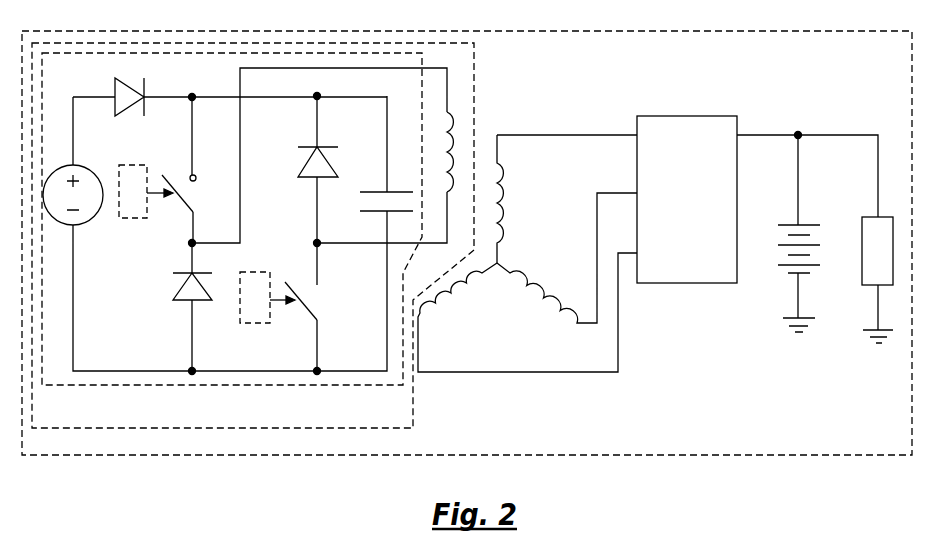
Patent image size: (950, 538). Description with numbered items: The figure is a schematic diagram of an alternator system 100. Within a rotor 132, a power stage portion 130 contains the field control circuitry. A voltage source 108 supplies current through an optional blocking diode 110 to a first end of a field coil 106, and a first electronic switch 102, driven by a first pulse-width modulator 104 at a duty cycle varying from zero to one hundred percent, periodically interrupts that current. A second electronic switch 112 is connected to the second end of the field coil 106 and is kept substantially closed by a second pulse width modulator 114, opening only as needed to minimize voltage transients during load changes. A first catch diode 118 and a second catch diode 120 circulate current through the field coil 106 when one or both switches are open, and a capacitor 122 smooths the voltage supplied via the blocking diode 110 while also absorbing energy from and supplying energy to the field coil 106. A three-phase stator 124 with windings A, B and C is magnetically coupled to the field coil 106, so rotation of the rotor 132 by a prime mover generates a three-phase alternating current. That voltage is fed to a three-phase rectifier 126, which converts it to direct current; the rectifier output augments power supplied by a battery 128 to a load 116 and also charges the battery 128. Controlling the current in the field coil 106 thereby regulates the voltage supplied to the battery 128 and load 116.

The alternator system 100 is at (752, 0).
The first electronic switch 102 is at (182, 203).
The first pulse-width modulator 104 is at (134, 165).
The field coil 106 is at (453, 112).
The voltage source 108 is at (87, 167).
The blocking diode 110 is at (144, 77).
The second electronic switch 112 is at (306, 302).
The second pulse width modulator 114 is at (255, 323).
The load 116 is at (871, 287).
The first catch diode 118 is at (184, 300).
The second catch diode 120 is at (303, 168).
The capacitor 122 is at (375, 192).
The three-phase stator 124 is at (500, 262).
The three-phase rectifier 126 is at (701, 283).
The battery 128 is at (810, 225).
The power stage portion 130 is at (190, 386).
The rotor 132 is at (413, 421).